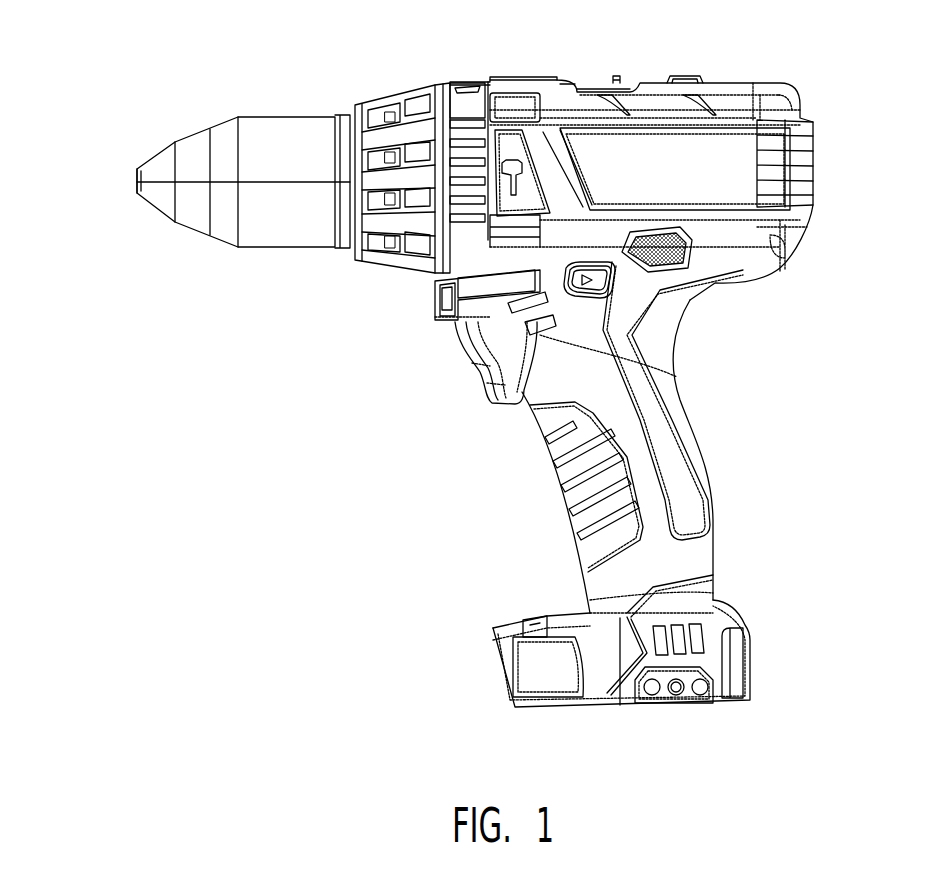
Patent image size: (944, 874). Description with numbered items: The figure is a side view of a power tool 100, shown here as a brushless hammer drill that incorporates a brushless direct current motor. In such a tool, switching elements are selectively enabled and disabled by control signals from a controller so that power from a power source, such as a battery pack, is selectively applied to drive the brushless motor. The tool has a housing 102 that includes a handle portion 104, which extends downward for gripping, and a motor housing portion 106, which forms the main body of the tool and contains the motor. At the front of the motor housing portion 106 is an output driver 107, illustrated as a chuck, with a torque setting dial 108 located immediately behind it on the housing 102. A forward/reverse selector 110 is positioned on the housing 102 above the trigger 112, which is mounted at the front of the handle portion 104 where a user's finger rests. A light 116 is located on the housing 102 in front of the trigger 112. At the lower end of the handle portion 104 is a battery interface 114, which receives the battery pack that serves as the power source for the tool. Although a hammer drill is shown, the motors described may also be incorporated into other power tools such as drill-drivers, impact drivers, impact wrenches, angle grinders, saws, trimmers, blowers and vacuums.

The power tool 100 is at (114, 131).
The housing 102 is at (625, 232).
The handle portion 104 is at (717, 502).
The motor housing portion 106 is at (812, 143).
The output driver 107 is at (337, 78).
The torque setting dial 108 is at (397, 97).
The forward/reverse selector 110 is at (600, 282).
The trigger 112 is at (480, 371).
The battery interface 114 is at (758, 662).
The light 116 is at (432, 297).